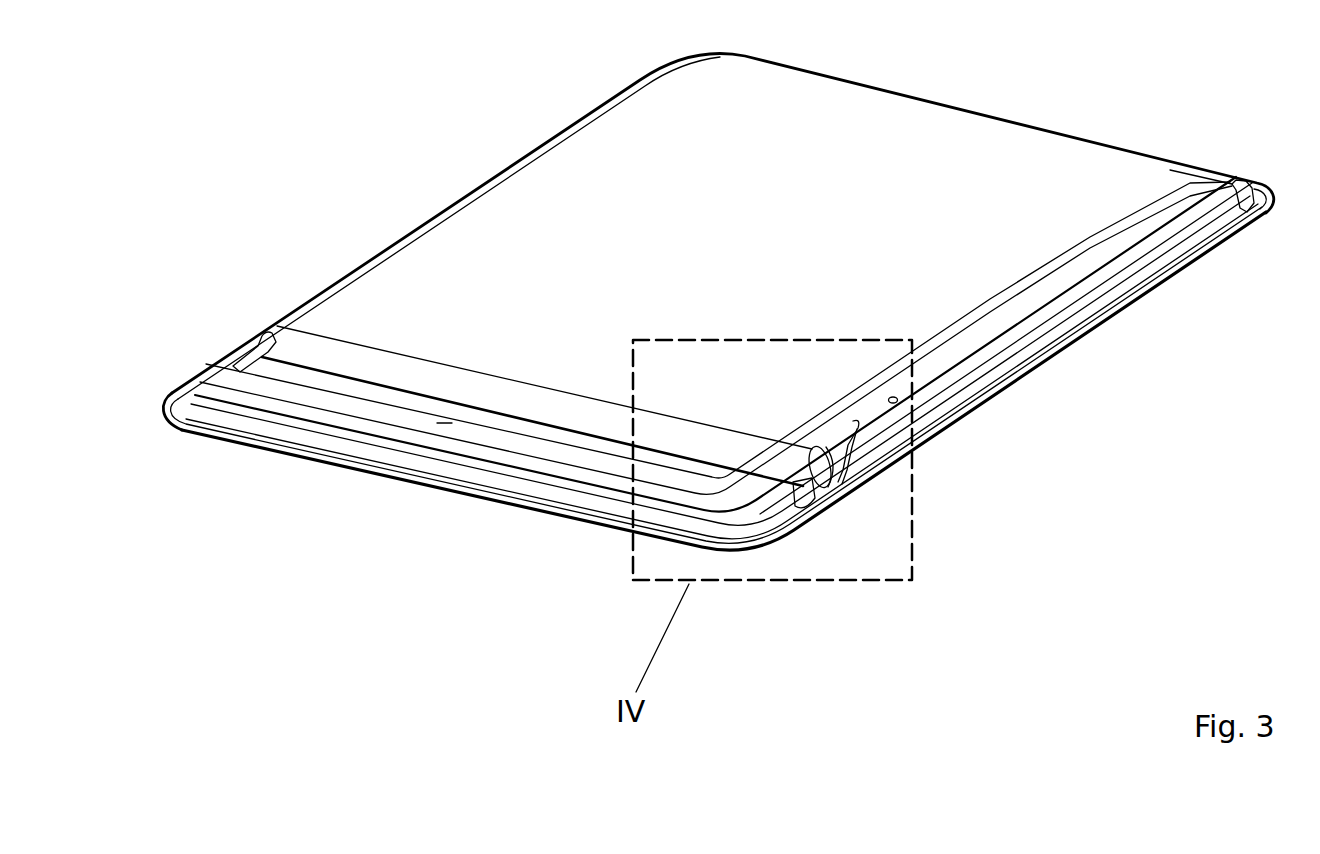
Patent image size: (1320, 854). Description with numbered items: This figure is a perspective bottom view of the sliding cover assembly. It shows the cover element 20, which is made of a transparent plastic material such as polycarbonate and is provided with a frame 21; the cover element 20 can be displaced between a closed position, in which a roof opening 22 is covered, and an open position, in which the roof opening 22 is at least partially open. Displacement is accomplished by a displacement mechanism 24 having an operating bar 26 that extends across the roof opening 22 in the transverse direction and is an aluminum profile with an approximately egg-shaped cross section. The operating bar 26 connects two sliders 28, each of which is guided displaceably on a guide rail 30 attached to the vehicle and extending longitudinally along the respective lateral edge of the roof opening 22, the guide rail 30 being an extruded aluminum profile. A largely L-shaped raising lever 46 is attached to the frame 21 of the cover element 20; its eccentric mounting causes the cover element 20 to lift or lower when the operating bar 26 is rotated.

The cover element 20 is at (742, 237).
The frame 21 is at (1190, 200).
The roof opening 22 is at (1033, 327).
The displacement mechanism 24 is at (502, 428).
The operating bar 26 is at (340, 355).
The slider 28 is at (233, 362).
The guide rail 30 is at (427, 219).
The raising lever 46 is at (862, 470).